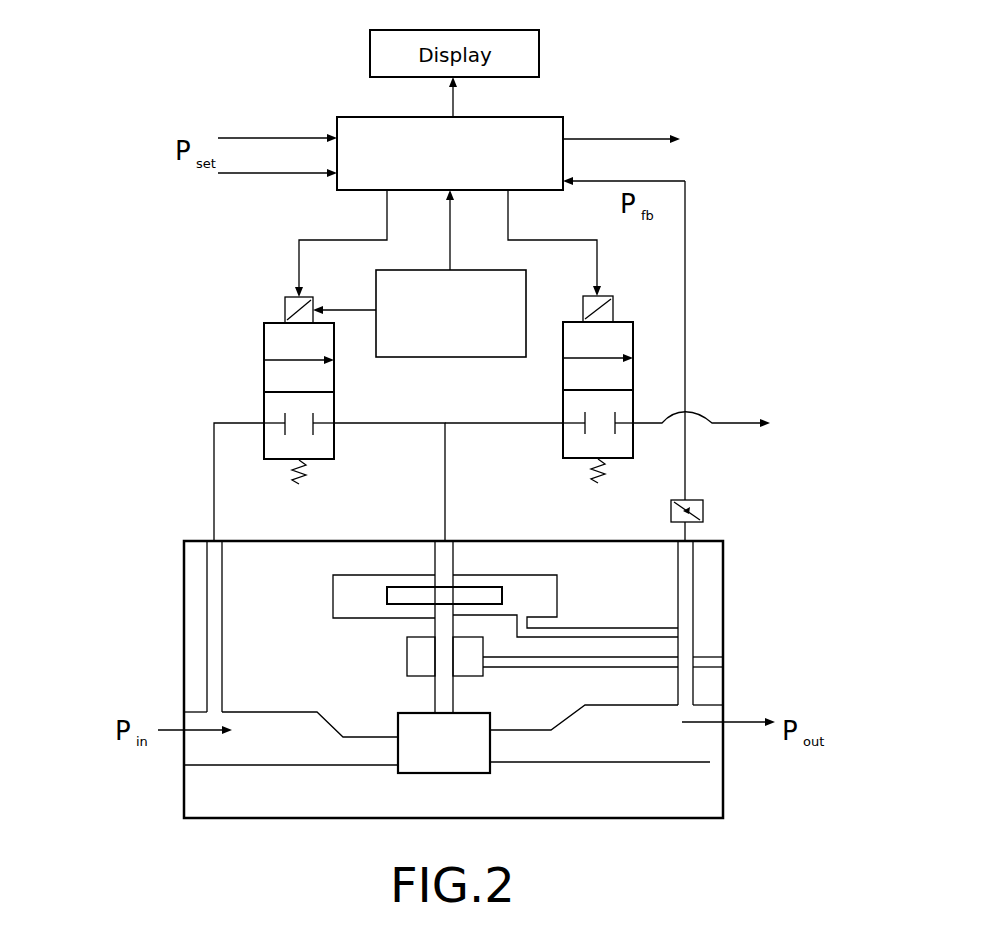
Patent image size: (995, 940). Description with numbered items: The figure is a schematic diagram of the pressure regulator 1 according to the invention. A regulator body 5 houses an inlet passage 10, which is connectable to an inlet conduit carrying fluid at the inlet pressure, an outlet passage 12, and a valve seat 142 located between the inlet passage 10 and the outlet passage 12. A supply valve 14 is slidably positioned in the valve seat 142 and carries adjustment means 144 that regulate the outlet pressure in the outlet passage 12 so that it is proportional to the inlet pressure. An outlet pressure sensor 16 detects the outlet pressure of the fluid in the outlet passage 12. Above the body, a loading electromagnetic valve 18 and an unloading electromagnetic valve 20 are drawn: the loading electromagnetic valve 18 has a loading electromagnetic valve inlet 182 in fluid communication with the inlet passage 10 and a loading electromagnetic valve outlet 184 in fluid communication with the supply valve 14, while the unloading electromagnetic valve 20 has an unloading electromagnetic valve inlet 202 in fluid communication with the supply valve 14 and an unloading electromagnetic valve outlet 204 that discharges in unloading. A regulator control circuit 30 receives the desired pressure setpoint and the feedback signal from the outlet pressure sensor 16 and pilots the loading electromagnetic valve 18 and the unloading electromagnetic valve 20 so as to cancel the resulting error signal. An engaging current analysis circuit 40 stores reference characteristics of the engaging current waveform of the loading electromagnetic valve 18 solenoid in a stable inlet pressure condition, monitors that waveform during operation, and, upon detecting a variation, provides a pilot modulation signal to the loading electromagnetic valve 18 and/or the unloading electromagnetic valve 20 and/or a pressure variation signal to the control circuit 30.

The pressure regulator 1 is at (853, 134).
The regulator control circuit 30 is at (542, 117).
The engaging current analysis circuit 40 is at (527, 280).
The loading electromagnetic valve 18 is at (264, 380).
The unloading electromagnetic valve 20 is at (633, 375).
The unloading electromagnetic valve outlet 204 is at (740, 417).
The loading electromagnetic valve inlet 182 is at (214, 490).
The loading electromagnetic valve outlet 184 is at (400, 428).
The unloading electromagnetic valve inlet 202 is at (497, 425).
The outlet pressure sensor 16 is at (704, 511).
The regulator body 5 is at (723, 790).
The inlet passage 10 is at (218, 765).
The outlet passage 12 is at (725, 762).
The adjustment means 144 is at (517, 598).
The valve seat 142 is at (424, 690).
The supply valve 14 is at (470, 698).